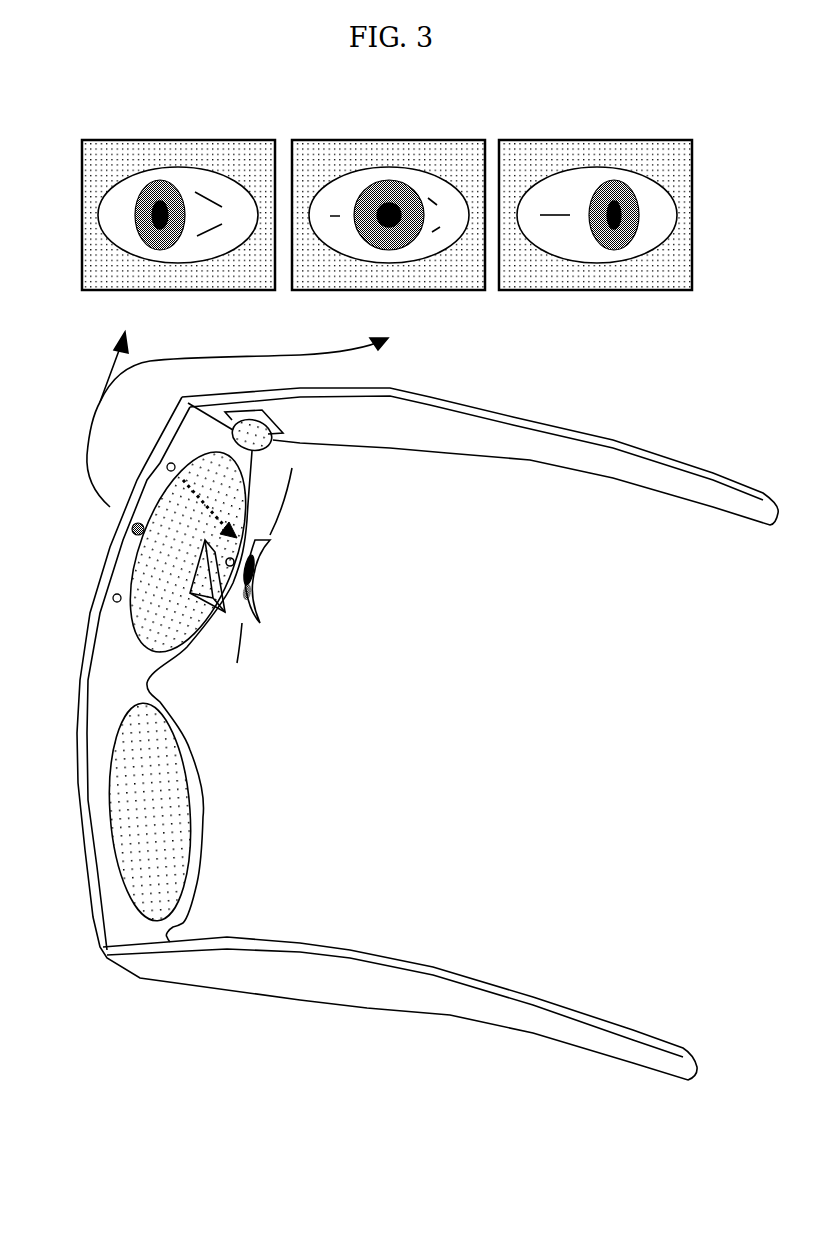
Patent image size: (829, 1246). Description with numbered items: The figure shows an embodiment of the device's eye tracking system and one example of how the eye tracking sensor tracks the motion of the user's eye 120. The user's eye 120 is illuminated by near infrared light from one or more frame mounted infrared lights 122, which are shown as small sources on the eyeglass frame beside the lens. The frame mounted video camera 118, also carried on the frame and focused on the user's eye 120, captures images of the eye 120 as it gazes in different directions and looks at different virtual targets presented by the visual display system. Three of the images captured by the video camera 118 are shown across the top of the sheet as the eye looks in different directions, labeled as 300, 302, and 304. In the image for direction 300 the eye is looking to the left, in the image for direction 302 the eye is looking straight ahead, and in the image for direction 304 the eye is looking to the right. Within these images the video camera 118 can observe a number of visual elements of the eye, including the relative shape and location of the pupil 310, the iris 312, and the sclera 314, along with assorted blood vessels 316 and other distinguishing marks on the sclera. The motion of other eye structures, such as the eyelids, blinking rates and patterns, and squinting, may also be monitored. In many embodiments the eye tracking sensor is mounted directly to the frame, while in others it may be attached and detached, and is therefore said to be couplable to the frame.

The image of the eye looking to the left 300 is at (147, 130).
The image of the eye looking straight ahead 302 is at (352, 128).
The image of the eye looking to the right 304 is at (595, 216).
The pupil 310 is at (622, 195).
The iris 312 is at (640, 192).
The sclera 314 is at (573, 242).
The blood vessels 316 is at (548, 222).
The frame mounted video camera 118 is at (131, 538).
The user's eye 120 is at (268, 575).
The frame mounted infrared lights 122 is at (172, 457).